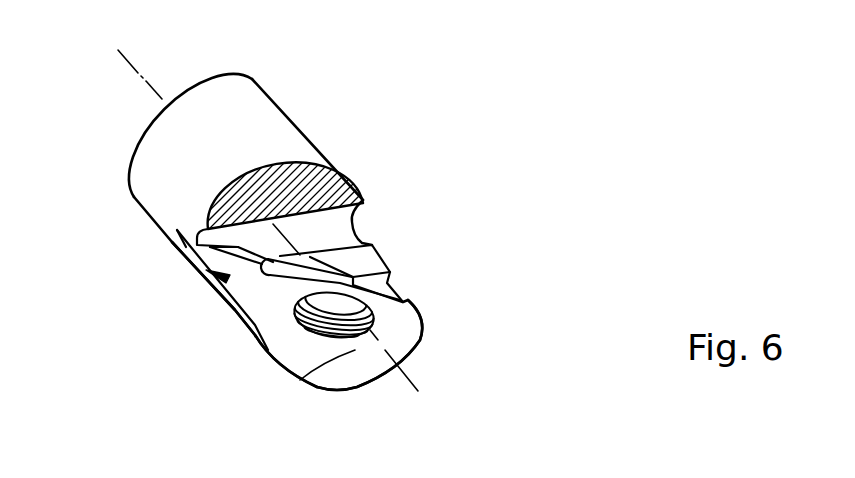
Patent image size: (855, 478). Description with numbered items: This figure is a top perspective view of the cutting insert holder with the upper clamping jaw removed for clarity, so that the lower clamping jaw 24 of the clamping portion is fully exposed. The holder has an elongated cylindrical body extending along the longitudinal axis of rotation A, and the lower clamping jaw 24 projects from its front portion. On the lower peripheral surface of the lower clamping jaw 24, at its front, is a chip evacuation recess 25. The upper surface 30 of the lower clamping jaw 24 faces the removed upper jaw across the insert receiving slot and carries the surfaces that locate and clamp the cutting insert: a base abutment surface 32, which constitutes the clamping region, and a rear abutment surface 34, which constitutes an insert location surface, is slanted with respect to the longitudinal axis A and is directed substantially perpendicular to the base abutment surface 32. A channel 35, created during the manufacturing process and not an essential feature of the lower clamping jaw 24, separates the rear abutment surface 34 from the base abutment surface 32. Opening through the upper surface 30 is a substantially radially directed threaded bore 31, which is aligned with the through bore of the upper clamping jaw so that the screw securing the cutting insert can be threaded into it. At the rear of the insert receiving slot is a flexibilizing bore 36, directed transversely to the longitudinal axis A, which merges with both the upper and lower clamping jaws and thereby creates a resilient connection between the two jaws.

The axis of rotation A is at (132, 66).
The lower clamping jaw 24 is at (187, 262).
The chip evacuation recess 25 is at (277, 347).
The upper surface 30 is at (427, 342).
The threaded bore 31 is at (290, 307).
The base abutment surface 32 is at (300, 380).
The rear abutment surface 34 is at (347, 273).
The channel 35 is at (403, 303).
The flexibilizing bore 36 is at (343, 227).